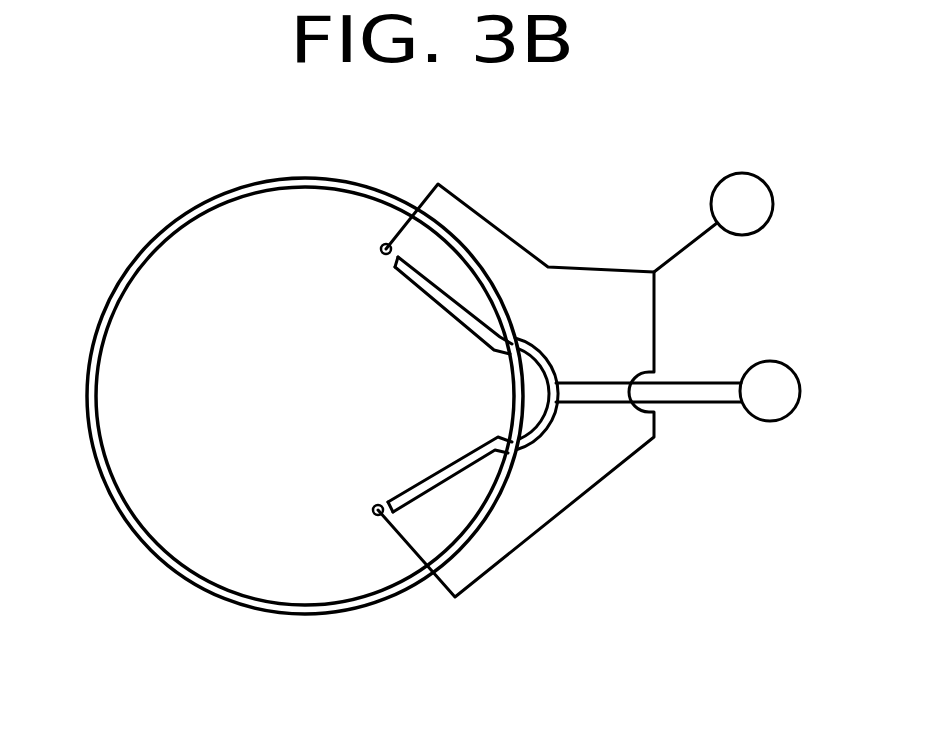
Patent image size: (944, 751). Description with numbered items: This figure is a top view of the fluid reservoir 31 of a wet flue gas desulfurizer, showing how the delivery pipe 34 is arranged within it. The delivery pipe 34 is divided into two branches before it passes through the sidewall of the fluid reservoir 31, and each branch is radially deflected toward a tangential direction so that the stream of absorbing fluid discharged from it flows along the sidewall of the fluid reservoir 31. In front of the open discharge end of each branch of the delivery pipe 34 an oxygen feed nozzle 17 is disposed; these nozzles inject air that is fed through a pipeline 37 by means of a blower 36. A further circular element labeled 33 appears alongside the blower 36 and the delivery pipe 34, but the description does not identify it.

The fluid reservoir 31 is at (207, 216).
The pipeline 37 is at (517, 239).
The oxygen feed nozzle 17 is at (382, 254).
The delivery pipe 34 is at (598, 382).
The blower 36 is at (745, 236).
The ball 33 is at (766, 421).